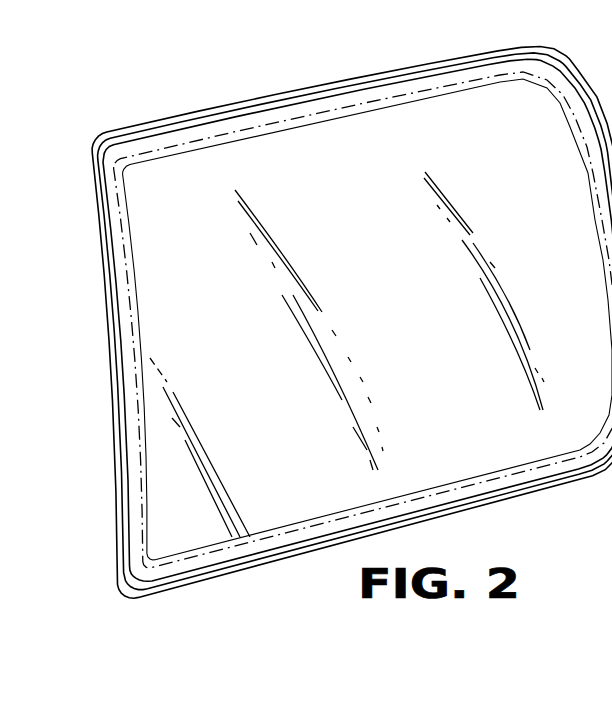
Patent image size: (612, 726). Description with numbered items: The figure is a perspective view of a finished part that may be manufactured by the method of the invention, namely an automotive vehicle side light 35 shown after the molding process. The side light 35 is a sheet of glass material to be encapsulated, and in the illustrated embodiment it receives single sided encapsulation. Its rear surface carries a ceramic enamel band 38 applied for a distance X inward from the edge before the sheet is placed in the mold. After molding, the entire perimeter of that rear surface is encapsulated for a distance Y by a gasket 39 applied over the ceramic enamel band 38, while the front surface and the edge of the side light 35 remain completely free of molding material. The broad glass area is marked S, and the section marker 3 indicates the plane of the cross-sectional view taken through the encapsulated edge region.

The section line 3- 3 is at (384, 36).
The automotive vehicle side light 35 is at (197, 430).
The ceramic enamel band 38 is at (596, 222).
The gasket 39 is at (447, 88).
The glass surface S is at (396, 315).
The distance X is at (227, 187).
The distance Y is at (176, 190).